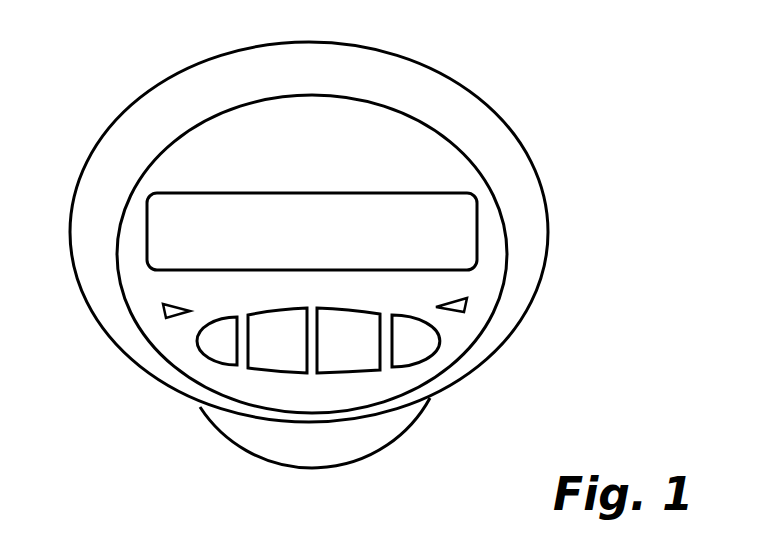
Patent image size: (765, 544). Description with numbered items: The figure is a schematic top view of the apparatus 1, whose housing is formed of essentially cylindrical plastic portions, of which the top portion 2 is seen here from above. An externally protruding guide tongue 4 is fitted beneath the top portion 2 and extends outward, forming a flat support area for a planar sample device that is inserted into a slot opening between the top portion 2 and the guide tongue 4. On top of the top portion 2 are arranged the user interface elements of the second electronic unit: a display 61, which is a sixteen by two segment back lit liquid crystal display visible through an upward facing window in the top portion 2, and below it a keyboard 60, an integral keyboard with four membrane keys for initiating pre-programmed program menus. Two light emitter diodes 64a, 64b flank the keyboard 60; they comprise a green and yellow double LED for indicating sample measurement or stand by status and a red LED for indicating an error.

The apparatus 1 is at (494, 93).
The top portion 2 is at (115, 155).
The guide tongue 4 is at (377, 433).
The display 61 is at (459, 211).
The keyboard 60 is at (412, 347).
The light emitter diode 64a is at (464, 300).
The light emitter diode 64b is at (163, 305).